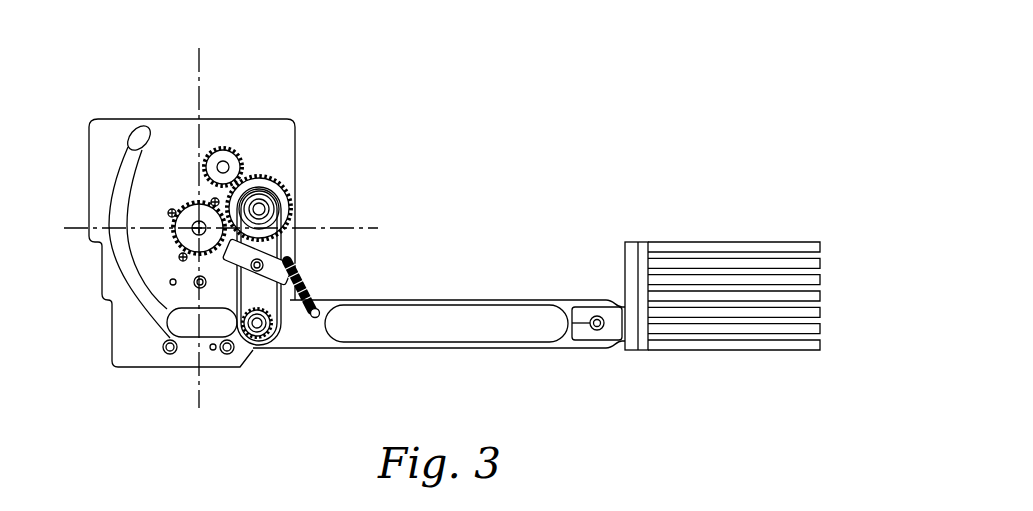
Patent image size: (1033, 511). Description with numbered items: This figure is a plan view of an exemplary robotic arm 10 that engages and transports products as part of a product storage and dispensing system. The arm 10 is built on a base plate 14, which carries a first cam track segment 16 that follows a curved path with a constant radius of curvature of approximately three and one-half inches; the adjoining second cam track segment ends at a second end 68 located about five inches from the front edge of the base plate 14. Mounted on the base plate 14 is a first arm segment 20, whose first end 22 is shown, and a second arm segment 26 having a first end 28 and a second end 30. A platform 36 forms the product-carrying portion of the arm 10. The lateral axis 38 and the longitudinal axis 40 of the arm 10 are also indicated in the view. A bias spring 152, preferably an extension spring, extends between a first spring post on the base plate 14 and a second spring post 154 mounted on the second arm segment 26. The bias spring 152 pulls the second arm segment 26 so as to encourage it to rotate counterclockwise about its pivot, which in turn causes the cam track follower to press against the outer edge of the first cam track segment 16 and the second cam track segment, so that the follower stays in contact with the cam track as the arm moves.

The robotic arm 10 is at (648, 61).
The base plate 14 is at (128, 98).
The first cam track segment 16 is at (88, 181).
The first arm segment 20 is at (313, 240).
The first end 22 is at (292, 193).
The second arm segment 26 is at (502, 278).
The first end 28 is at (188, 330).
The second end 30 is at (598, 348).
The platform 36 is at (728, 222).
The lateral axis 38 is at (197, 64).
The longitudinal axis 40 is at (373, 226).
The second end 68 is at (268, 343).
The bias spring 152 is at (285, 330).
The second spring post 154 is at (327, 317).